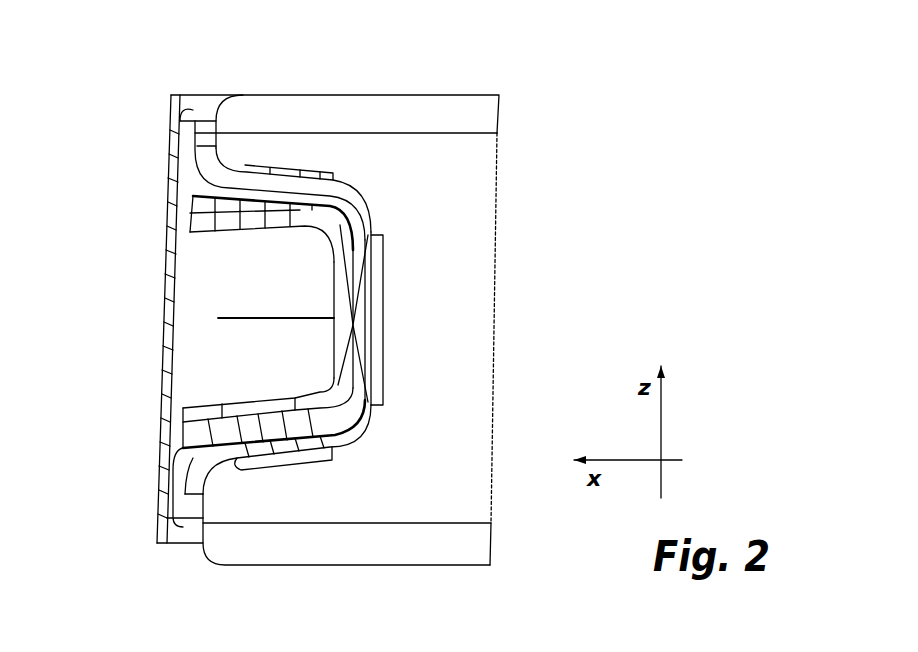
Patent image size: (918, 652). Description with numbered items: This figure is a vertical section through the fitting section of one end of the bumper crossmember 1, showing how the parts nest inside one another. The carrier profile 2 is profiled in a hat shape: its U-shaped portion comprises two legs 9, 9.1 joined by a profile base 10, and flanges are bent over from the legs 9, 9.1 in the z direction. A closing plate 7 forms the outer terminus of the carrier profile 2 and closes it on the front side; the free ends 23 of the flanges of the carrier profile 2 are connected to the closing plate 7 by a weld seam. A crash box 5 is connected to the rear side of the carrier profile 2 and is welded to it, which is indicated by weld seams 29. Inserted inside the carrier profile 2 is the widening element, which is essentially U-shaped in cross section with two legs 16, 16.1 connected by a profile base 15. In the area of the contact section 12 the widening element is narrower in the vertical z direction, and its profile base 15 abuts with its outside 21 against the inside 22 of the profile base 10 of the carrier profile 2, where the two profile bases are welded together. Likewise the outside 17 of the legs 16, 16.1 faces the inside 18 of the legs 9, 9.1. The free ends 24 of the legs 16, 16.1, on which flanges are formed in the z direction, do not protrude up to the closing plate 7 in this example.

The bumper crossmember 1 is at (538, 185).
The carrier profile 2 is at (363, 192).
The crash box 5 is at (477, 171).
The closing plate 7 is at (169, 214).
The leg 9 is at (244, 177).
The leg 9.1 is at (260, 458).
The profile base 10 is at (369, 361).
The contact section 12 is at (210, 243).
The profile base 15 is at (357, 303).
The leg 16 is at (268, 222).
The leg 16.1 is at (238, 396).
The outside of legs of widening element 17 is at (304, 193).
The inside of legs of carrier profile 18 is at (286, 204).
The outside of profile base of widening element 21 is at (386, 258).
The inside of profile base of carrier profile 22 is at (348, 337).
The free ends of flanges of carrier profile 23 is at (199, 111).
The free ends of legs 24 is at (181, 436).
The weld seam 29 is at (289, 171).